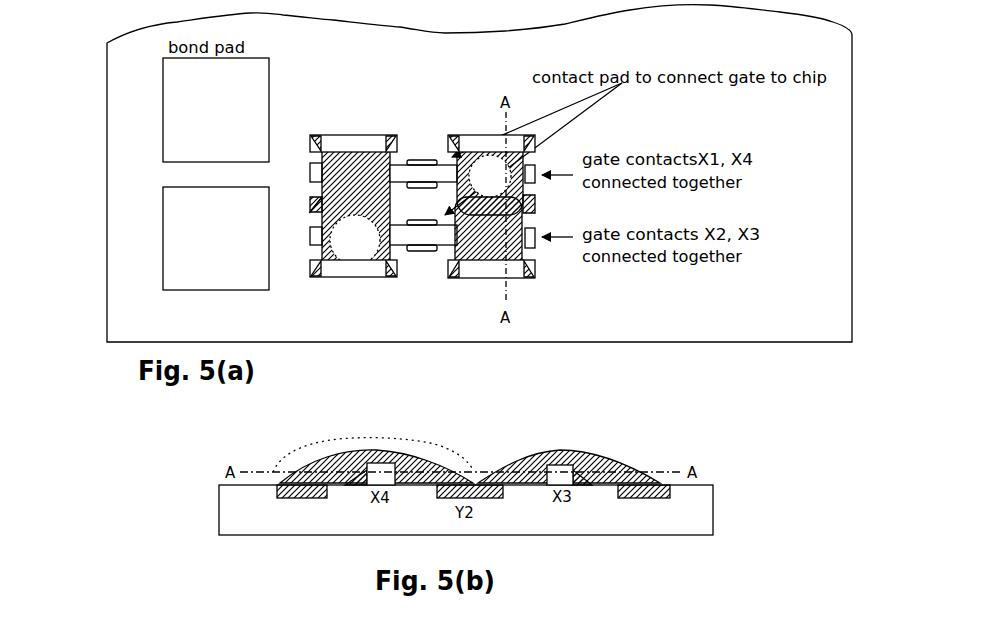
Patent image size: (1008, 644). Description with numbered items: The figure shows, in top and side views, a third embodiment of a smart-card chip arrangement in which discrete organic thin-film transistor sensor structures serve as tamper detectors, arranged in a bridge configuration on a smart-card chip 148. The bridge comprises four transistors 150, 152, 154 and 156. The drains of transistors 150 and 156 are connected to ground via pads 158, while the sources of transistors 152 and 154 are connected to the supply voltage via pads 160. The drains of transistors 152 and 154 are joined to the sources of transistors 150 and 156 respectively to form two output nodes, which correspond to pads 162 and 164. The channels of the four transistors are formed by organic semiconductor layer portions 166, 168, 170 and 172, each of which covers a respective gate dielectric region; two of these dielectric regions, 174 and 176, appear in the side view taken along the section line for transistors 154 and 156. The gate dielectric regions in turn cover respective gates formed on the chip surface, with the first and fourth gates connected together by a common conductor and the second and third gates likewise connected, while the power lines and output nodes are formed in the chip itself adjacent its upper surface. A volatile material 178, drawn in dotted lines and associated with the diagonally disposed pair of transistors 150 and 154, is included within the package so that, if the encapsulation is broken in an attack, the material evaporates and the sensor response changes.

In FIG. 5A, the smart-card chip 148 is at (812, 337).
In FIG. 5B, the smart-card chip 148 is at (228, 508).
In FIG. 5A, the transistor 150 is at (300, 260).
In FIG. 5A, the transistor 152 is at (303, 146).
In FIG. 5A, the transistor 154 is at (557, 148).
In FIG. 5A, the transistor 156 is at (554, 265).
In FIG. 5A, the pad 158 is at (325, 278).
In FIG. 5B, the pad 158 is at (667, 498).
In FIG. 5A, the pad 160 is at (443, 158).
In FIG. 5B, the pad 160 is at (292, 495).
In FIG. 5A, the pad 162 is at (310, 203).
In FIG. 5A, the pad 164 is at (535, 205).
In FIG. 5B, the pad 164 is at (500, 495).
In FIG. 5A, the organic semiconductor layer portion 166 is at (310, 208).
In FIG. 5A, the organic semiconductor layer portion 168 is at (353, 148).
In FIG. 5A, the organic semiconductor layer portion 170 is at (495, 135).
In FIG. 5B, the organic semiconductor layer portion 170 is at (333, 465).
In FIG. 5A, the organic semiconductor layer portion 172 is at (478, 262).
In FIG. 5B, the organic semiconductor layer portion 172 is at (610, 462).
In FIG. 5B, the gate dielectric region 174 is at (588, 485).
In FIG. 5B, the gate dielectric region 176 is at (352, 478).
In FIG. 5A, the volatile material 178 is at (380, 255).